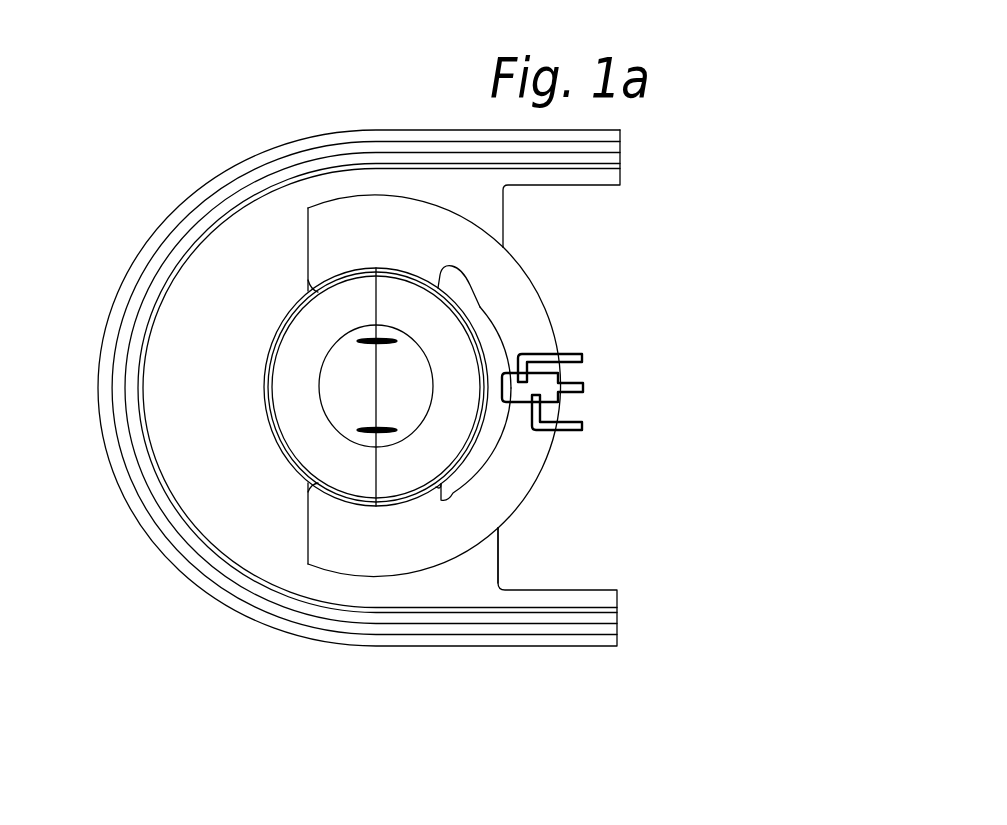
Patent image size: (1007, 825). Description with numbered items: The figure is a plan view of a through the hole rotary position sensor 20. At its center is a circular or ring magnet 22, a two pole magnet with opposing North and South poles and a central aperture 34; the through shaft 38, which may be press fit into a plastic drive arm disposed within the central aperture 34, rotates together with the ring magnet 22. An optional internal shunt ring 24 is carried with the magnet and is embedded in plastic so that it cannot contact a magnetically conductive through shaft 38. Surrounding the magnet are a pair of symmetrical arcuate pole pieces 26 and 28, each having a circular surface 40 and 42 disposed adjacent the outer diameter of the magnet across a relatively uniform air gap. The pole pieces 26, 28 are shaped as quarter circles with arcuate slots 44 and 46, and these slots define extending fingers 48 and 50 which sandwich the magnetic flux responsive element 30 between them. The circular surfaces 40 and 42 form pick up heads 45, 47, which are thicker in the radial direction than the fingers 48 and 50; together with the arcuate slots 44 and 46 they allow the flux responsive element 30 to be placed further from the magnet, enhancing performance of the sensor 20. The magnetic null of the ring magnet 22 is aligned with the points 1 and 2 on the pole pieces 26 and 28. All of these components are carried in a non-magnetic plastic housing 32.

The point on pole piece 1 is at (452, 186).
The point on pole piece 2 is at (434, 620).
The through the hole rotary position sensor 20 is at (447, 380).
The ring magnet 22 is at (530, 387).
The internal shunt ring 24 is at (636, 414).
The pole piece 26 is at (405, 163).
The pole piece 28 is at (403, 620).
The magnetic flux responsive element 30 is at (575, 370).
The non-magnetic housing 32 is at (565, 617).
The central aperture 34 is at (223, 420).
The through shaft 38 is at (444, 345).
The circular surface 40 is at (353, 265).
The circular surface 42 is at (322, 587).
The arcuate slot 44 is at (416, 352).
The pick up head 45 is at (379, 553).
The arcuate slot 46 is at (463, 483).
The pick up head 47 is at (337, 247).
The extending finger 48 is at (527, 304).
The extending finger 50 is at (526, 514).